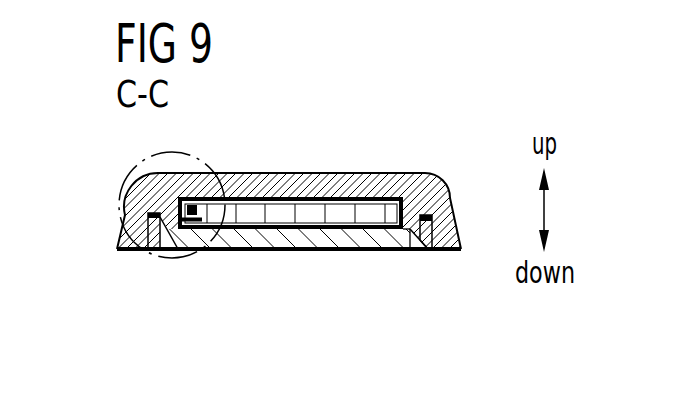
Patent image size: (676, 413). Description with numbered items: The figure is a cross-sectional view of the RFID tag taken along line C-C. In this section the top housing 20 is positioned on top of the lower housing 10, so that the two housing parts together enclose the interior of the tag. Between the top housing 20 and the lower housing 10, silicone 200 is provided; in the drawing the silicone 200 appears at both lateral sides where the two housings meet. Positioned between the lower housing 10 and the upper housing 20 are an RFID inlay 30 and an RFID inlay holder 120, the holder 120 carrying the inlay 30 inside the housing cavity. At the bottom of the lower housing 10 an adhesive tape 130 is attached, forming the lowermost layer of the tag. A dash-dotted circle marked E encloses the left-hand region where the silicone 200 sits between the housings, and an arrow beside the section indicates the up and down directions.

The lower housing 10 is at (412, 240).
The top housing 20 is at (422, 193).
The RFID inlay 30 is at (287, 197).
The RFID inlay holder 120 is at (342, 217).
The adhesive tape 130 is at (279, 249).
The silicone 200 is at (127, 223).
The detail region E is at (173, 258).